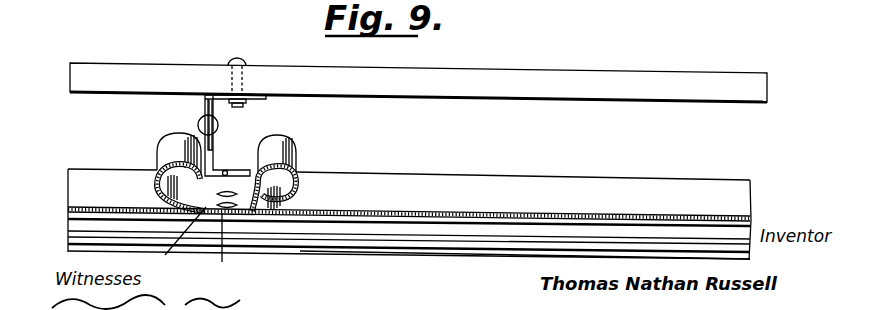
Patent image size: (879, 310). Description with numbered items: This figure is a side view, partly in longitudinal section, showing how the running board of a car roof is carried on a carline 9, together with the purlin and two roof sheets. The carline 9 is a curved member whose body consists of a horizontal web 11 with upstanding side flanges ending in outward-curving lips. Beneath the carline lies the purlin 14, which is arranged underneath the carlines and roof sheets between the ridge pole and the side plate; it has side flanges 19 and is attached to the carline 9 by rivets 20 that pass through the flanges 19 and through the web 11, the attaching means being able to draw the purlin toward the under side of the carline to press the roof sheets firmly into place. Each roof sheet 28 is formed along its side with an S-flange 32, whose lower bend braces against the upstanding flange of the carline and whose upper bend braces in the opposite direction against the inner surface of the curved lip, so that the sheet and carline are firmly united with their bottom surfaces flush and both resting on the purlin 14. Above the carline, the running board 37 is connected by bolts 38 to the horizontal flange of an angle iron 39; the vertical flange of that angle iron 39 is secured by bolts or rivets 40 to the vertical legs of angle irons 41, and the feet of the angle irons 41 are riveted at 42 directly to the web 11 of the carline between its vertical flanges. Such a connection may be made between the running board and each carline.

The carline 9 is at (321, 143).
The horizontal web 11 is at (235, 185).
The purlin 14 is at (402, 255).
The side flanges 19 is at (470, 226).
The rivets 20 is at (219, 250).
The roof sheet 28 is at (602, 178).
The S-flange 32 is at (157, 198).
The running board 37 is at (672, 60).
The bolts 38 is at (238, 62).
The angle iron 39 is at (258, 98).
The bolts or rivets 40 is at (198, 123).
The angle irons 41 is at (204, 110).
The rivets 42 is at (176, 242).